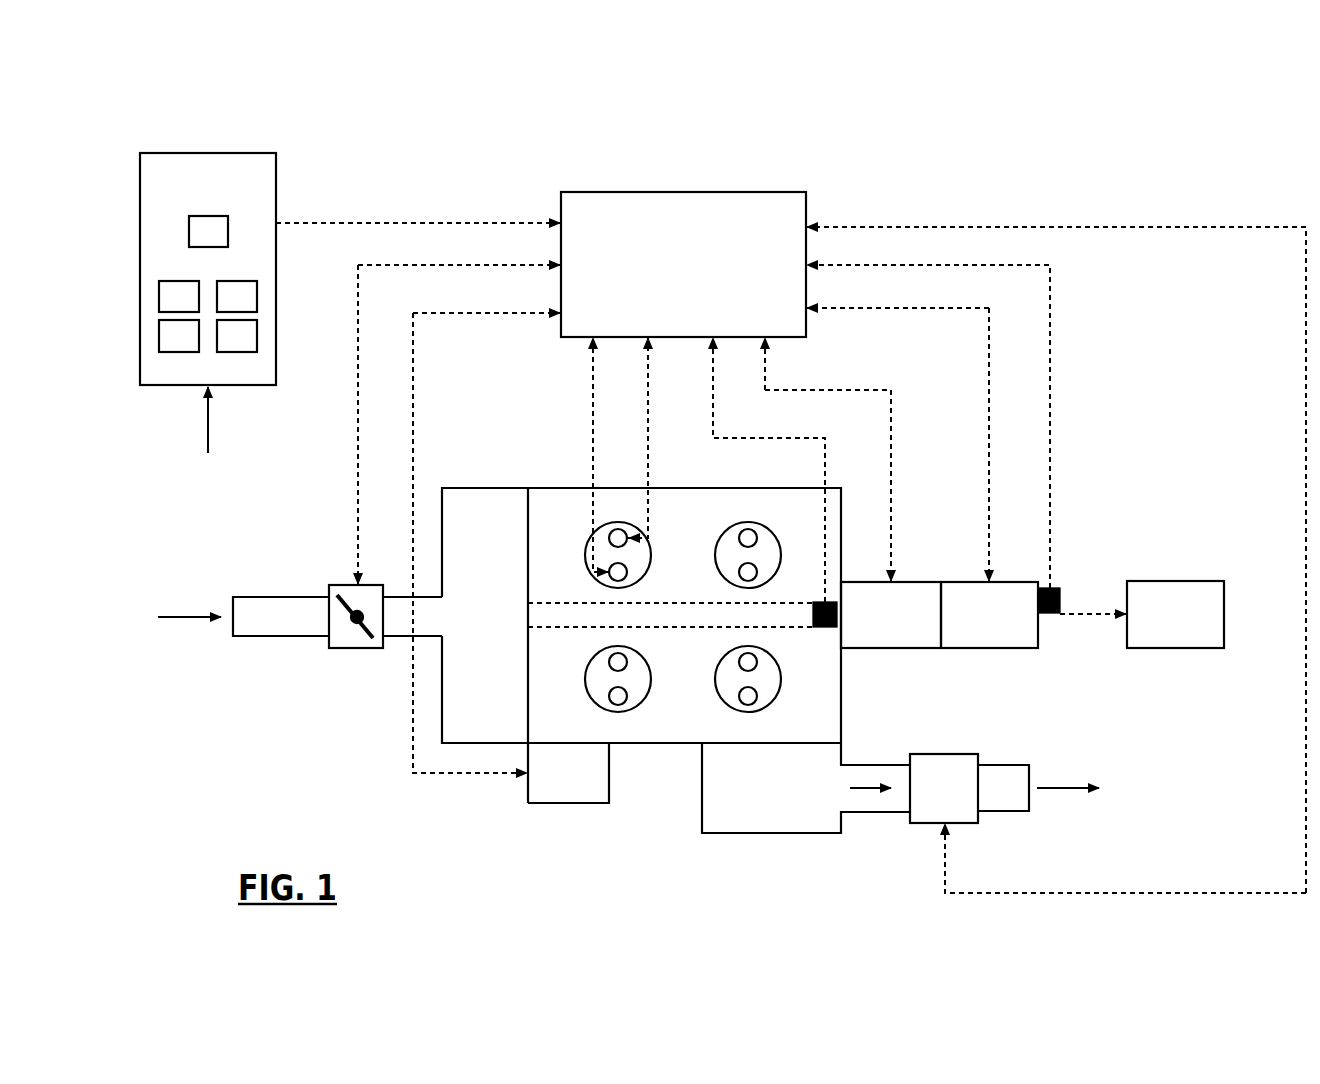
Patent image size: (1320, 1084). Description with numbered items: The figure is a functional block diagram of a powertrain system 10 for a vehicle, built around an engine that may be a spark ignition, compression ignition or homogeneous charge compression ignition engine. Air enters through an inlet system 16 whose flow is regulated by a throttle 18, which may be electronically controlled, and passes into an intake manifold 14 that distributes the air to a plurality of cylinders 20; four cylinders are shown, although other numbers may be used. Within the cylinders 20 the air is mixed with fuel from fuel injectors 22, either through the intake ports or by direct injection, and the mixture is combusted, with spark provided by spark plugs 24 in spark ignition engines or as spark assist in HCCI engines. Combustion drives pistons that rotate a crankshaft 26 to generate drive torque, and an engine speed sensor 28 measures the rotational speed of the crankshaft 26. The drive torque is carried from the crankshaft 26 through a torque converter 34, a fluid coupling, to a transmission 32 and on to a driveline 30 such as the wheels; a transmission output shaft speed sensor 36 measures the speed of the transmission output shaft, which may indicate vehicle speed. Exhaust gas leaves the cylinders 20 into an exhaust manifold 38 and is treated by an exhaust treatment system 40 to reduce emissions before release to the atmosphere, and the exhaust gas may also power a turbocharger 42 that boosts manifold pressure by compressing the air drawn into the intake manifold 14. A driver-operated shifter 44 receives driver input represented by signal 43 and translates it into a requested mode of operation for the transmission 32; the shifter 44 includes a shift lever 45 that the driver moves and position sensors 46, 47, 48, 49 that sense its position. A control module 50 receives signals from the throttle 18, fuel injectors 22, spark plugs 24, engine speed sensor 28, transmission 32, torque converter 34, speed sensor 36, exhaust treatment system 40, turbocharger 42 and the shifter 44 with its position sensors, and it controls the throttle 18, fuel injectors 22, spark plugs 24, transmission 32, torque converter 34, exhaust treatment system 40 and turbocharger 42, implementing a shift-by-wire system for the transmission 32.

The powertrain system 10 is at (1165, 146).
The intake manifold 14 is at (467, 488).
The inlet system 16 is at (243, 597).
The throttle 18 is at (358, 648).
The cylinders 20 is at (587, 667).
The fuel injectors 22 is at (629, 662).
The spark plugs 24 is at (739, 698).
The crankshaft 26 is at (670, 616).
The engine speed sensor 28 is at (825, 627).
The driveline 30 is at (1177, 648).
The transmission 32 is at (990, 648).
The torque converter 34 is at (893, 648).
The transmission output shaft speed (TOSS) sensor 36 is at (1050, 613).
The exhaust manifold 38 is at (808, 833).
The exhaust treatment system 40 is at (945, 754).
The turbocharger 42 is at (610, 776).
The signal 43 is at (207, 435).
The shifter 44 is at (208, 153).
The shift lever 45 is at (208, 231).
The position sensor 46 is at (179, 296).
The position sensor 47 is at (179, 336).
The position sensor 48 is at (237, 336).
The position sensor 49 is at (237, 296).
The control module 50 is at (683, 192).